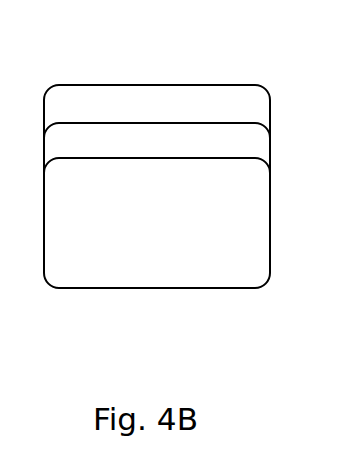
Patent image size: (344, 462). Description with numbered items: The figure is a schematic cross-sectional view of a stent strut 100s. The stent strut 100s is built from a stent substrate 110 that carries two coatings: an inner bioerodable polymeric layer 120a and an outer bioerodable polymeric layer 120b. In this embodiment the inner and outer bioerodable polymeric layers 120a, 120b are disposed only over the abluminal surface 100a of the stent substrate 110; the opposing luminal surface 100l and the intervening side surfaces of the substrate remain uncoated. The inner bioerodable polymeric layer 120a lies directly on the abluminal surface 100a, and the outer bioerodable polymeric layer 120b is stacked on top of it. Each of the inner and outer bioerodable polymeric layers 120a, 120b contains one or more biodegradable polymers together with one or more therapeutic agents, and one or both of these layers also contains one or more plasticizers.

The outer bioerodable polymeric layer 120b is at (192, 116).
The inner bioerodable polymeric layer 120a is at (192, 150).
The stent substrate 110 is at (173, 225).
The abluminal surface 100a is at (98, 158).
The stent strut 100s is at (253, 79).
The luminal surface 100l is at (145, 288).